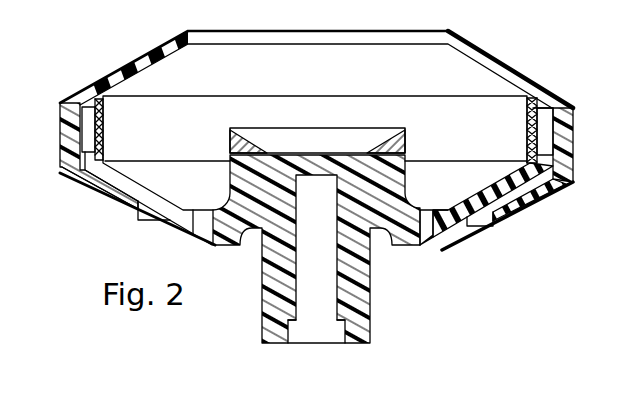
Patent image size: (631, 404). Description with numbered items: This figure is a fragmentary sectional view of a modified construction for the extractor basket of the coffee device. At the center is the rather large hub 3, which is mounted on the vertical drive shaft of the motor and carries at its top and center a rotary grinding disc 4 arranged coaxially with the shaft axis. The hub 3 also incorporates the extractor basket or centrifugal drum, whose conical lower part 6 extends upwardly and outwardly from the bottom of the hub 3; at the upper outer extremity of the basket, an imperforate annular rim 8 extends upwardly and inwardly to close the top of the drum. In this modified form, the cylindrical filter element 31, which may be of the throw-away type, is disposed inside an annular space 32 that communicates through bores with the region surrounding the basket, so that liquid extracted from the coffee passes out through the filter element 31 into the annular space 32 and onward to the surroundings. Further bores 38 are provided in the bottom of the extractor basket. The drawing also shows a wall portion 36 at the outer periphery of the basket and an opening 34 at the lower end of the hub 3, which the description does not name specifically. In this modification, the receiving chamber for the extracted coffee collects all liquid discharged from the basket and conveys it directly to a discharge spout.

The imperforate annular rim 8 is at (483, 66).
The annular space 32 is at (572, 121).
The cylindrical filter element 31 is at (527, 141).
The rotary grinding disc 4 is at (403, 143).
The hub 3 is at (403, 244).
The bores 38 is at (426, 232).
The conical lower part 6 is at (460, 220).
The outer wall 36 is at (521, 193).
The bore 34 is at (337, 345).